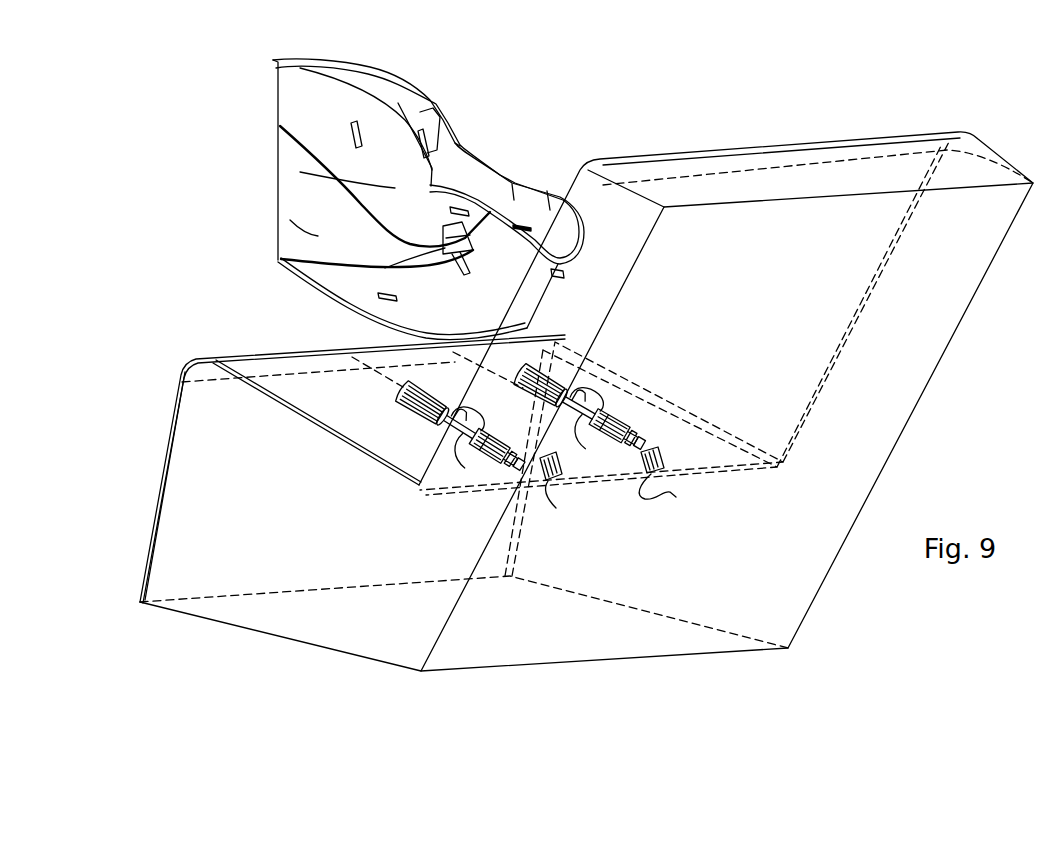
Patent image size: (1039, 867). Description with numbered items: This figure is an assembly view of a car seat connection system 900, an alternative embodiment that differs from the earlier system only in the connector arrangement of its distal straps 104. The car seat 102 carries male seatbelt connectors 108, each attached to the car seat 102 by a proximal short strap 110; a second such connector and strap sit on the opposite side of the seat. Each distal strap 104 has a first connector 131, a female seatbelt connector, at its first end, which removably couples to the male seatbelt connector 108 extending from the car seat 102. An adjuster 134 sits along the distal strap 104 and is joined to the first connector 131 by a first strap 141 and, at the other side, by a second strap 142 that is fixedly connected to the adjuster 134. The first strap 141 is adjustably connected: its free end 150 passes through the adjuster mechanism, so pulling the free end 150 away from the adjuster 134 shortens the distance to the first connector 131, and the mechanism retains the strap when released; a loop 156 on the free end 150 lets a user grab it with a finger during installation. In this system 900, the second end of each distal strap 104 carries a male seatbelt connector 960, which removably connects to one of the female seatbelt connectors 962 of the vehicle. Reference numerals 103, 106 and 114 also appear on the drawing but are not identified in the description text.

The car seat connection system 900 is at (487, 100).
The car seat 102 is at (280, 64).
The seat bottom portion 103 is at (311, 214).
The distal strap 104 is at (412, 462).
The seat cushion 106 is at (210, 482).
The male seatbelt connector 108 is at (385, 268).
The proximal strap 110 is at (280, 259).
The seat back portion 114 is at (397, 176).
The first connector 131 is at (403, 403).
The adjuster 134 is at (478, 440).
The first strap 141 is at (440, 426).
The second strap 142 is at (503, 470).
The free end of the first strap 150 is at (468, 405).
The loop 156 is at (465, 408).
The male seatbelt connector 960 is at (516, 468).
The female seatbelt connector 962 is at (548, 482).